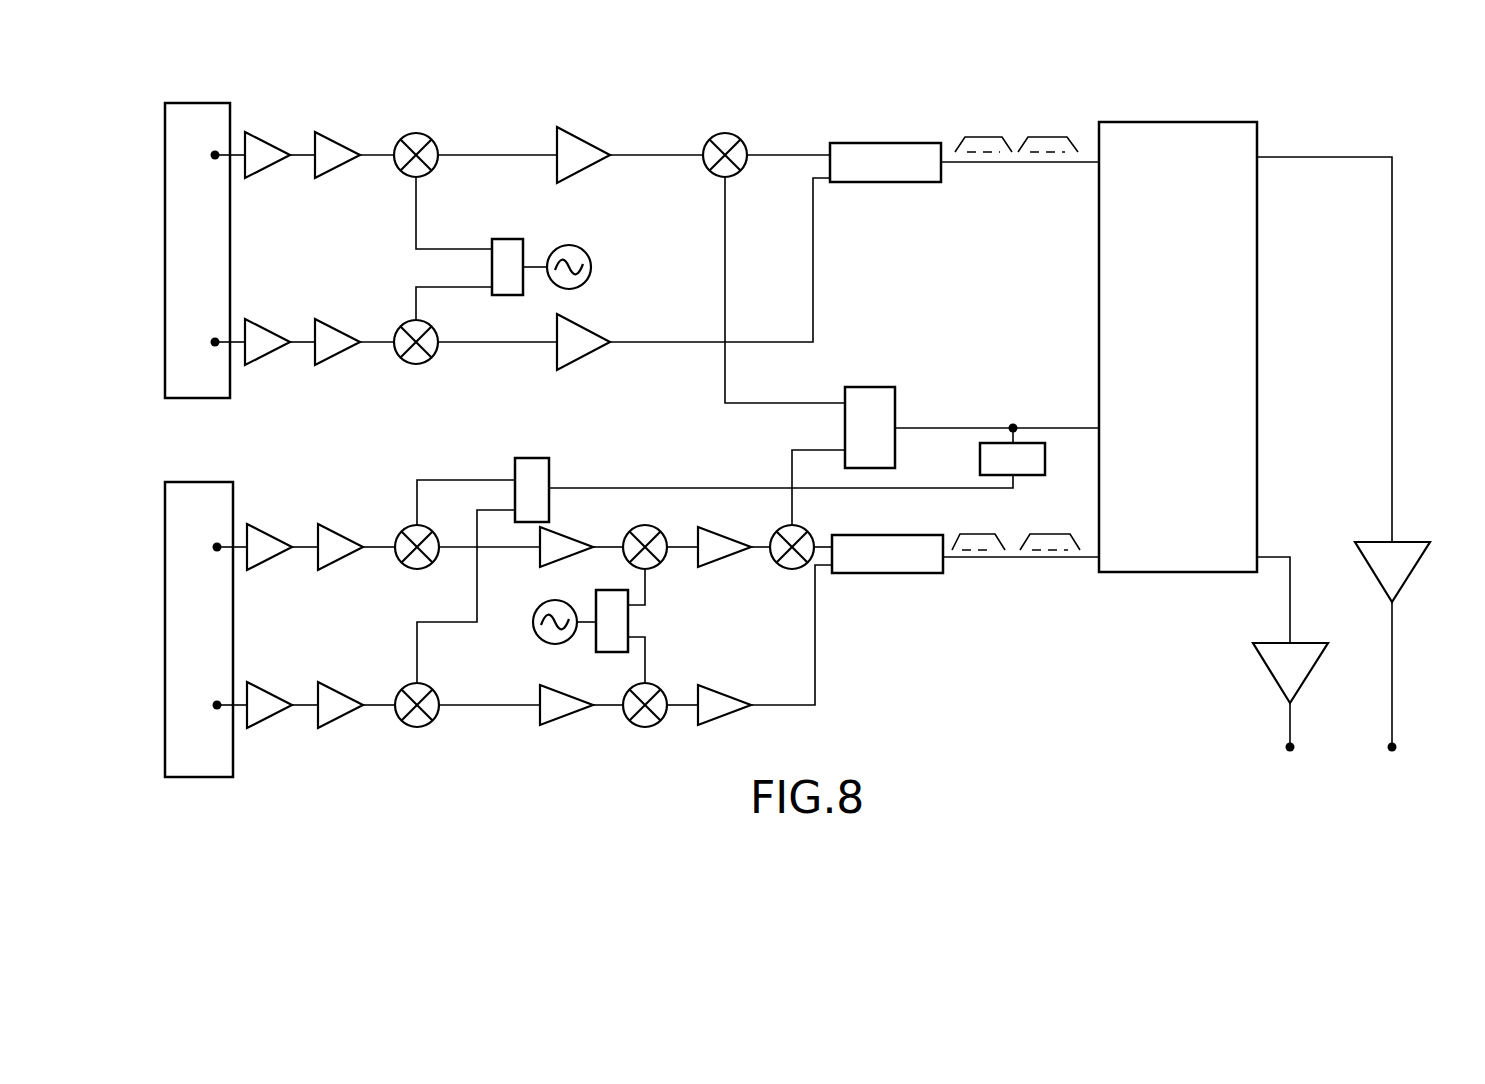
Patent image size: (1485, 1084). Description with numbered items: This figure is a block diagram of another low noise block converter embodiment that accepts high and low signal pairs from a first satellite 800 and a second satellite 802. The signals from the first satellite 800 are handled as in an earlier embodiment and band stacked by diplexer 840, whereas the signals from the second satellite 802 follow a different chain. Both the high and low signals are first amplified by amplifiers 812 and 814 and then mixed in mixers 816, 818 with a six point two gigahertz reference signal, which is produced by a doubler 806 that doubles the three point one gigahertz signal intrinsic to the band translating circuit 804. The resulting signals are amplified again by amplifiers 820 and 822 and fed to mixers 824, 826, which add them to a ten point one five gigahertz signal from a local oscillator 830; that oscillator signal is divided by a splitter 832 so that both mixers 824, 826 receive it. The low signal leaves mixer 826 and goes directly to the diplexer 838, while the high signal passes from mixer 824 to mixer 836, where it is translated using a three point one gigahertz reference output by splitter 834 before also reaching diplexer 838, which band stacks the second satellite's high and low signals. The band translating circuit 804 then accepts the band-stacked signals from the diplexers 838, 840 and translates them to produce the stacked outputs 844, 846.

The first satellite 800 is at (165, 103).
The second satellite 802 is at (165, 482).
The band translating circuit 804 is at (1257, 275).
The doubler 806 is at (1025, 475).
The amplifier 812 is at (273, 540).
The amplifier 814 is at (273, 699).
The mixer 816 is at (438, 532).
The mixer 818 is at (438, 690).
The amplifier 820 is at (560, 540).
The amplifier 822 is at (560, 698).
The mixer 824 is at (657, 530).
The mixer 826 is at (657, 688).
The local oscillator 830 is at (538, 612).
The splitter 832 is at (628, 630).
The splitter 834 is at (880, 387).
The mixer 836 is at (812, 533).
The diplexer 838 is at (908, 573).
The diplexer 840 is at (892, 143).
The stacked output 844 is at (1265, 667).
The stacked output 846 is at (1395, 540).